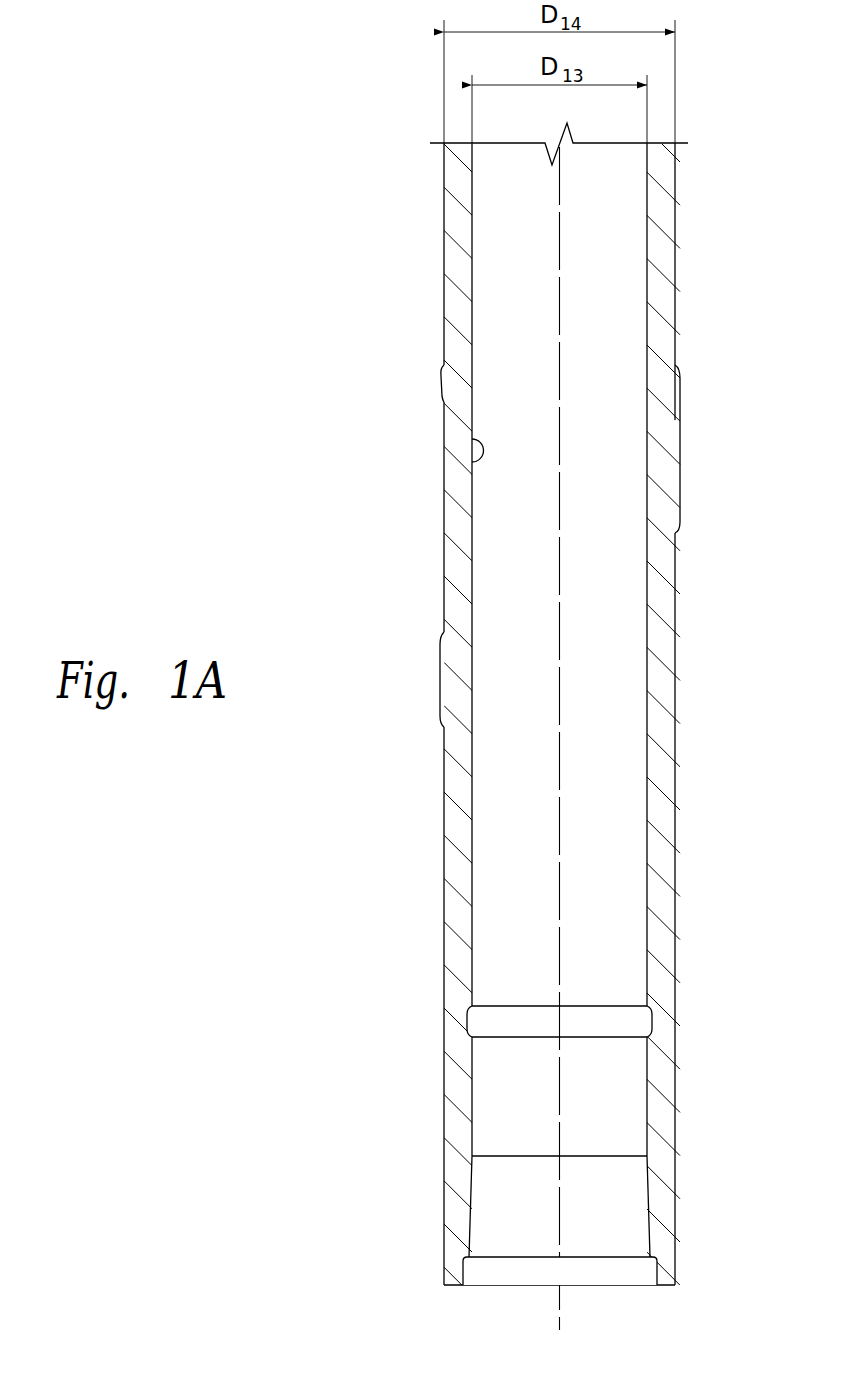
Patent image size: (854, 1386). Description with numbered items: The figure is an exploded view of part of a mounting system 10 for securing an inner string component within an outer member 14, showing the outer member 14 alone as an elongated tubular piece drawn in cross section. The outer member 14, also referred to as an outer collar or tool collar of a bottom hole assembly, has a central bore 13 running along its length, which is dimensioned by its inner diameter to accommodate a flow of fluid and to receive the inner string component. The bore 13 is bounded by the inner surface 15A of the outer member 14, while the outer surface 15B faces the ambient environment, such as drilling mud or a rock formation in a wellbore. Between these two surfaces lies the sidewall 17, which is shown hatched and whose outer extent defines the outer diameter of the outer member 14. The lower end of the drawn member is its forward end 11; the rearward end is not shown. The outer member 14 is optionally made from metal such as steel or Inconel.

The outer member 14 is at (440, 295).
The bore 13 is at (621, 707).
The mounting system 10 is at (558, 891).
The inner surface 15A is at (473, 440).
The outer surface 15B is at (444, 505).
The sidewall 17 is at (457, 610).
The forward end 11 is at (449, 1290).